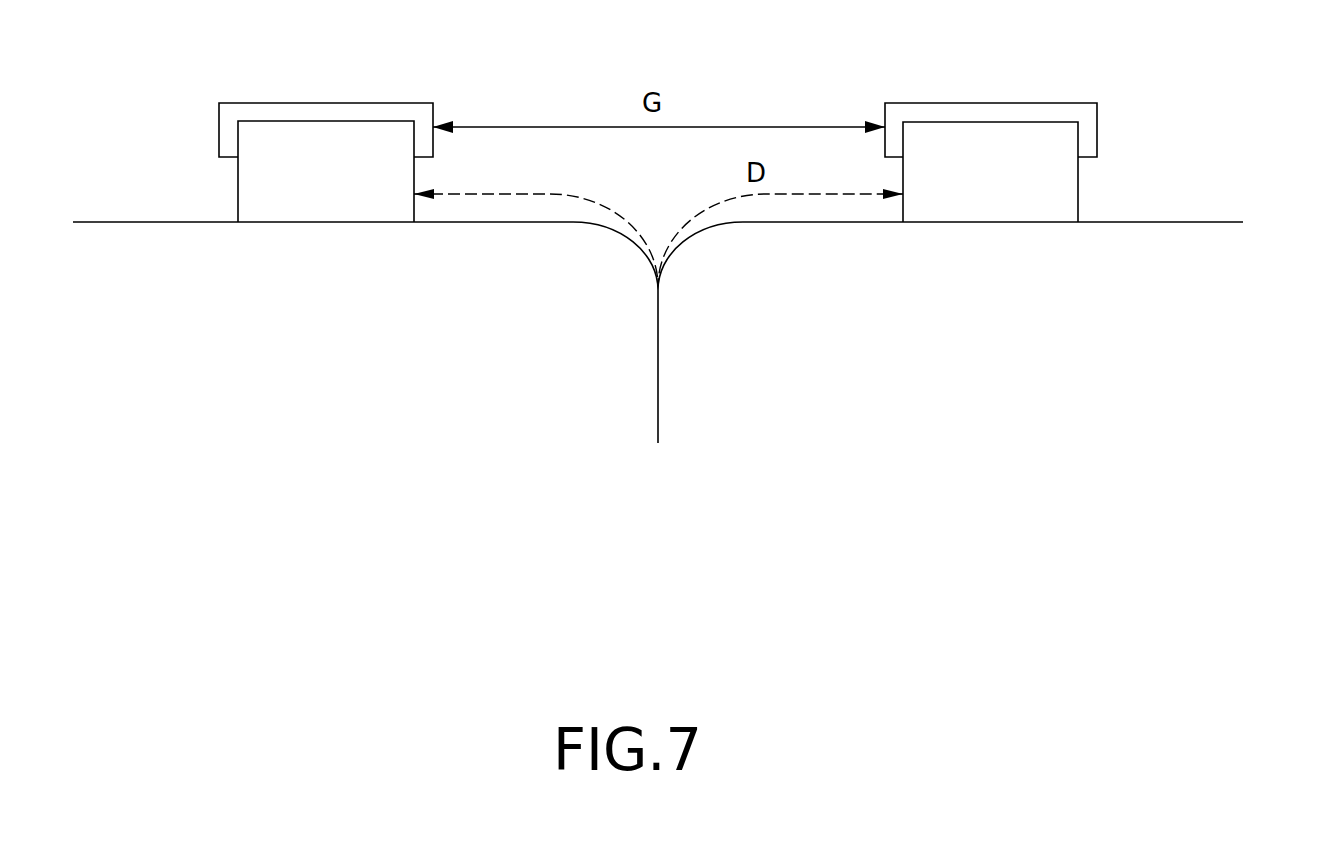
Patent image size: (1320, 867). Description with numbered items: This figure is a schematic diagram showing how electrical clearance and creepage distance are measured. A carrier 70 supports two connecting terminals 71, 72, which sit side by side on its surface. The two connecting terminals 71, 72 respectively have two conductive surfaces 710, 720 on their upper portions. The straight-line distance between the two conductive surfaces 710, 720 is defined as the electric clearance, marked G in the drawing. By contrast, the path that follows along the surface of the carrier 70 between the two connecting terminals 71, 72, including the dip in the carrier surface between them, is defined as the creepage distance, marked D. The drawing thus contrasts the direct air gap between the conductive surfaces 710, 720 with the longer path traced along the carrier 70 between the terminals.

The carrier 70 is at (1161, 240).
The connecting terminal 71 is at (297, 152).
The conductive surface 710 is at (332, 112).
The connecting terminal 72 is at (1021, 148).
The conductive surface 720 is at (955, 113).